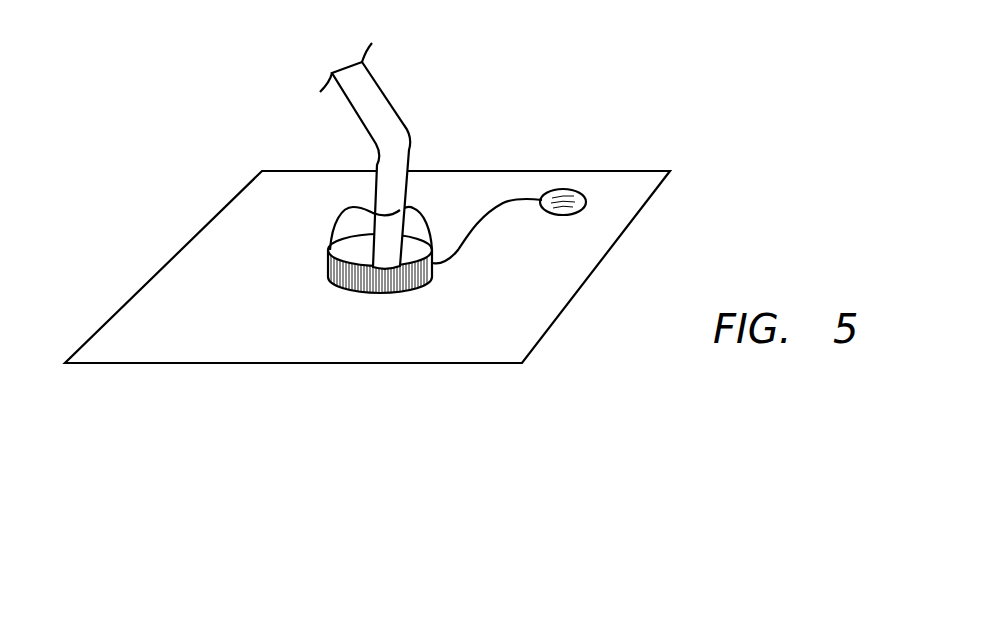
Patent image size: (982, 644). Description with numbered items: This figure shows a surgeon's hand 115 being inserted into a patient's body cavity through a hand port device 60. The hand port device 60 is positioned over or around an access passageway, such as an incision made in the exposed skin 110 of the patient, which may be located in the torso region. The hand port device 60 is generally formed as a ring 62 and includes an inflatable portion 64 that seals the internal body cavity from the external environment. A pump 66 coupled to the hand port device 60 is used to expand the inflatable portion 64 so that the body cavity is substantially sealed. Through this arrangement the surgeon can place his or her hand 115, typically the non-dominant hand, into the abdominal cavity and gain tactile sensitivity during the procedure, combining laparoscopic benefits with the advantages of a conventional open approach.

The hand port device 60 is at (300, 264).
The ring 62 is at (357, 277).
The inflatable portion 64 is at (343, 205).
The pump 66 is at (560, 188).
The skin 110 is at (205, 340).
The surgeon's hand 115 is at (382, 115).